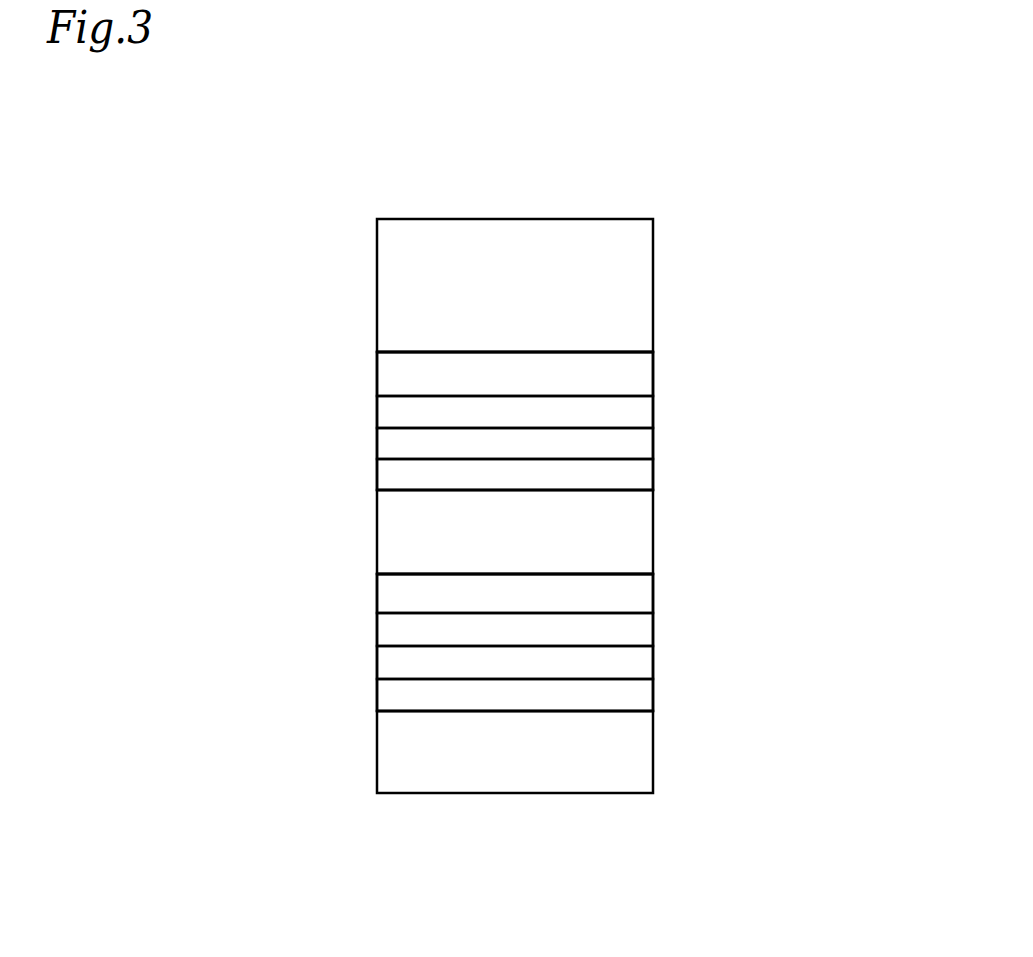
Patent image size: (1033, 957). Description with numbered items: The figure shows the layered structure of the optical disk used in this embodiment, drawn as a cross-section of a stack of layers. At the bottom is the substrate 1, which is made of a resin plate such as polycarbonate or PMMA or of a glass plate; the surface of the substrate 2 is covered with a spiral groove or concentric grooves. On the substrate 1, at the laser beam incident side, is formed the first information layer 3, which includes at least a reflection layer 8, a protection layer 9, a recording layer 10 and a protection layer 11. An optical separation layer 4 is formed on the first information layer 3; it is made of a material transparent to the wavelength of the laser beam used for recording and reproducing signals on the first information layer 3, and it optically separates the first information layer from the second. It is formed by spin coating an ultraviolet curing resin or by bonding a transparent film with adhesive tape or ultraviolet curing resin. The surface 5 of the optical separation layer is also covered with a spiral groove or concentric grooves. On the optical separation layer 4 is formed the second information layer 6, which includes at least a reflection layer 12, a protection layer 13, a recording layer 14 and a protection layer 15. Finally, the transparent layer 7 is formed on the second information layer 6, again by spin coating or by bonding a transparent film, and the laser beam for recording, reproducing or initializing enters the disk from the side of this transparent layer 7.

The substrate 1 is at (633, 286).
The surface of the substrate 2 is at (430, 352).
The first information layer 3 is at (370, 485).
The optical separation layer 4 is at (393, 513).
The surface of optical separation layer 5 is at (430, 574).
The second information layer 6 is at (370, 705).
The transparent layer 7 is at (633, 762).
The reflection layer 8 is at (633, 380).
The protection layer 9 is at (633, 413).
The recording layer 10 is at (633, 443).
The protection layer 11 is at (633, 476).
The reflection layer 12 is at (633, 598).
The protection layer 13 is at (633, 631).
The recording layer 14 is at (633, 665).
The protection layer 15 is at (633, 697).